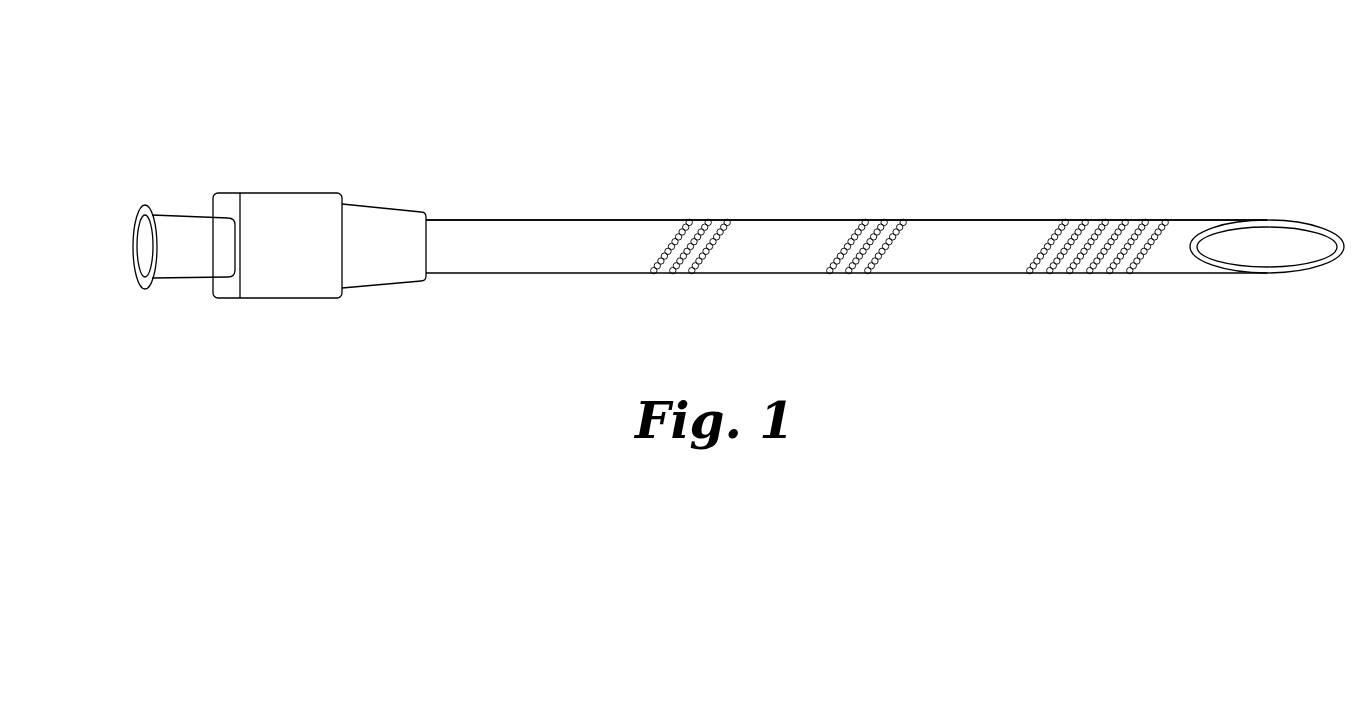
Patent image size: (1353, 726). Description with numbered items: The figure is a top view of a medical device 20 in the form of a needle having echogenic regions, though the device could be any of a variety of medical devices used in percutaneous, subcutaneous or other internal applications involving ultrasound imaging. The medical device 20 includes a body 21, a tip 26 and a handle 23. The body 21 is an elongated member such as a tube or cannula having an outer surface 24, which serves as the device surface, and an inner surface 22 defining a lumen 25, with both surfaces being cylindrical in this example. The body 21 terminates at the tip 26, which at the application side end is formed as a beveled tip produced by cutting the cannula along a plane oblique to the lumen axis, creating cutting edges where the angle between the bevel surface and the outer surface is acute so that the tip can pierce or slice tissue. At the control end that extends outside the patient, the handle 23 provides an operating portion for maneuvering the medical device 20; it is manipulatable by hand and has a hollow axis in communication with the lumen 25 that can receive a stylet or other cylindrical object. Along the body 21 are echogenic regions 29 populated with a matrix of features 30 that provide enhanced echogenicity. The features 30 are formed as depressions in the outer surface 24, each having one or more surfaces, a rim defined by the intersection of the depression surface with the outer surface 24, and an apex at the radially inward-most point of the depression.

The medical device 20 is at (742, 220).
The body 21 is at (802, 218).
The inner surface 22 is at (1218, 247).
The handle 23 is at (287, 220).
The outer surface 24 is at (515, 232).
The lumen 25 is at (1272, 243).
The tip 26 is at (1271, 272).
The echogenic regions 29 is at (642, 278).
The features 30 is at (1145, 258).